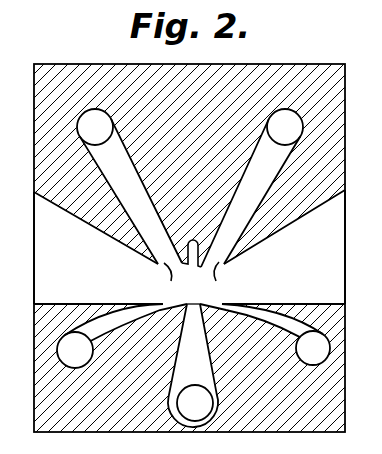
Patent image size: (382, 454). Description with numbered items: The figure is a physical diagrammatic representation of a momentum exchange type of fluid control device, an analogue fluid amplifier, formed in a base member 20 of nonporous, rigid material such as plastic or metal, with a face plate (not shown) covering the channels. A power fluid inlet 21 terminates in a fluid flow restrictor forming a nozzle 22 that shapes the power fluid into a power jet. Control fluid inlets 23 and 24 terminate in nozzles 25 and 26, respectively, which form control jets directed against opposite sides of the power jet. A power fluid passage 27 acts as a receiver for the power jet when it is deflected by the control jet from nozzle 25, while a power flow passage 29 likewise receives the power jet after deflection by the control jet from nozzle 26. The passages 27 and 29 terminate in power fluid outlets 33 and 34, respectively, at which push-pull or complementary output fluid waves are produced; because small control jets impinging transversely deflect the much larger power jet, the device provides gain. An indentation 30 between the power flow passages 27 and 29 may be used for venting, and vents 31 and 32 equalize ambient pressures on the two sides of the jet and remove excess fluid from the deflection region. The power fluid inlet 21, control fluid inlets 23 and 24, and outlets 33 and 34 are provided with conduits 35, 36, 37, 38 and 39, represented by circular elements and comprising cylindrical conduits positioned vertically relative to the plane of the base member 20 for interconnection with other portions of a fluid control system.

The base member 20 is at (293, 68).
The power fluid inlet 21 is at (174, 368).
The nozzle 22 is at (193, 315).
The control fluid inlet 23 is at (101, 340).
The control fluid inlet 24 is at (286, 346).
The nozzle 25 is at (163, 317).
The nozzle 26 is at (226, 311).
The power fluid passage 27 is at (217, 281).
The power flow passage 29 is at (171, 282).
The indentation 30 is at (191, 263).
The vent 31 is at (49, 260).
The vent 32 is at (335, 250).
The power fluid outlet 33 is at (291, 146).
The power fluid outlet 34 is at (127, 134).
The conduit 35 is at (209, 403).
The conduit 36 is at (73, 349).
The conduit 37 is at (316, 339).
The conduit 38 is at (281, 120).
The conduit 39 is at (90, 123).